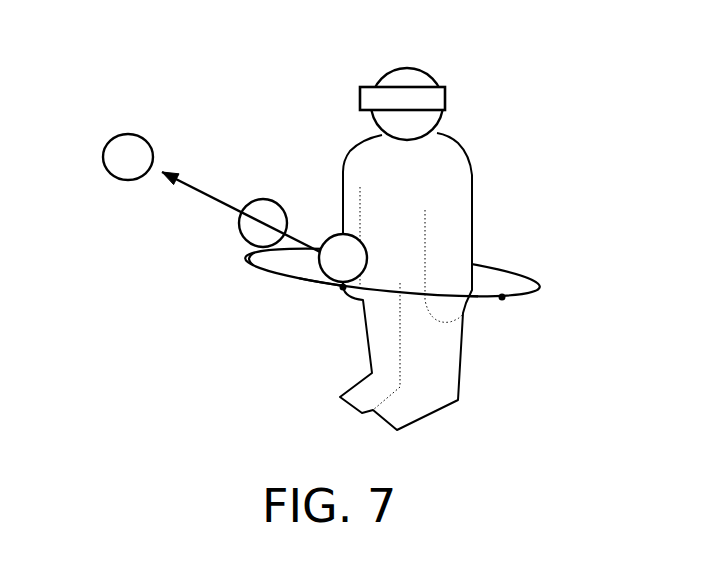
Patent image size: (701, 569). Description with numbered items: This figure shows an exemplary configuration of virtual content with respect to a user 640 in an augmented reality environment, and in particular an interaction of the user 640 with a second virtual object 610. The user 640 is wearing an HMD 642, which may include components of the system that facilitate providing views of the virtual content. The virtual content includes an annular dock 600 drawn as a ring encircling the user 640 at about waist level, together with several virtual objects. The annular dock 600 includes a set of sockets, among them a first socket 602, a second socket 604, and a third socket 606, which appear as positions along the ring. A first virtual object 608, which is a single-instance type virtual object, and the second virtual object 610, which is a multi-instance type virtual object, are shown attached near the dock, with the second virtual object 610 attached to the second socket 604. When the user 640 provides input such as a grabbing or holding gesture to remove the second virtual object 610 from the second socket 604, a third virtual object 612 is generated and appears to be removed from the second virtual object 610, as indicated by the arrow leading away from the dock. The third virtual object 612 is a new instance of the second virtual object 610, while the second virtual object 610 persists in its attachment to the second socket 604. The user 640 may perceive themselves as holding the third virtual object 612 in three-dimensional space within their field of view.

The annular dock 600 is at (528, 271).
The first socket 602 is at (503, 297).
The second socket 604 is at (343, 287).
The third socket 606 is at (252, 263).
The first virtual object 608 is at (251, 203).
The second virtual object 610 is at (330, 238).
The third virtual object 612 is at (127, 180).
The user 640 is at (452, 145).
The HMD 642 is at (408, 93).